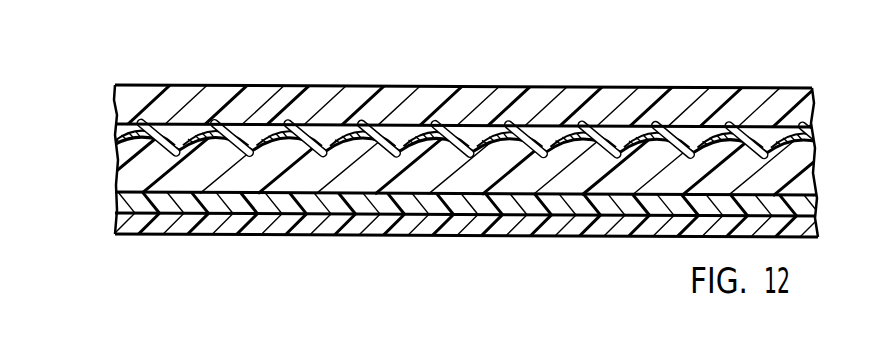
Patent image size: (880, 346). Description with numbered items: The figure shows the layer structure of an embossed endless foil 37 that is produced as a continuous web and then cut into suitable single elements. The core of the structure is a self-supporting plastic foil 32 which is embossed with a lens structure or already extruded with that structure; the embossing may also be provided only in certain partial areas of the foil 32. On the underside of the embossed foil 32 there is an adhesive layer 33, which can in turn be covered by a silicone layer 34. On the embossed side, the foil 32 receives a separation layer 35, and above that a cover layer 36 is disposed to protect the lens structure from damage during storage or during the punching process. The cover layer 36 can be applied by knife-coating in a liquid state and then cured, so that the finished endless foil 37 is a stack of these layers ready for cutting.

The self-supporting plastic foil 32 is at (134, 157).
The adhesive layer 33 is at (133, 200).
The silicone layer 34 is at (139, 226).
The separation layer 35 is at (114, 122).
The cover layer 36 is at (193, 96).
The endless foil 37 is at (691, 81).